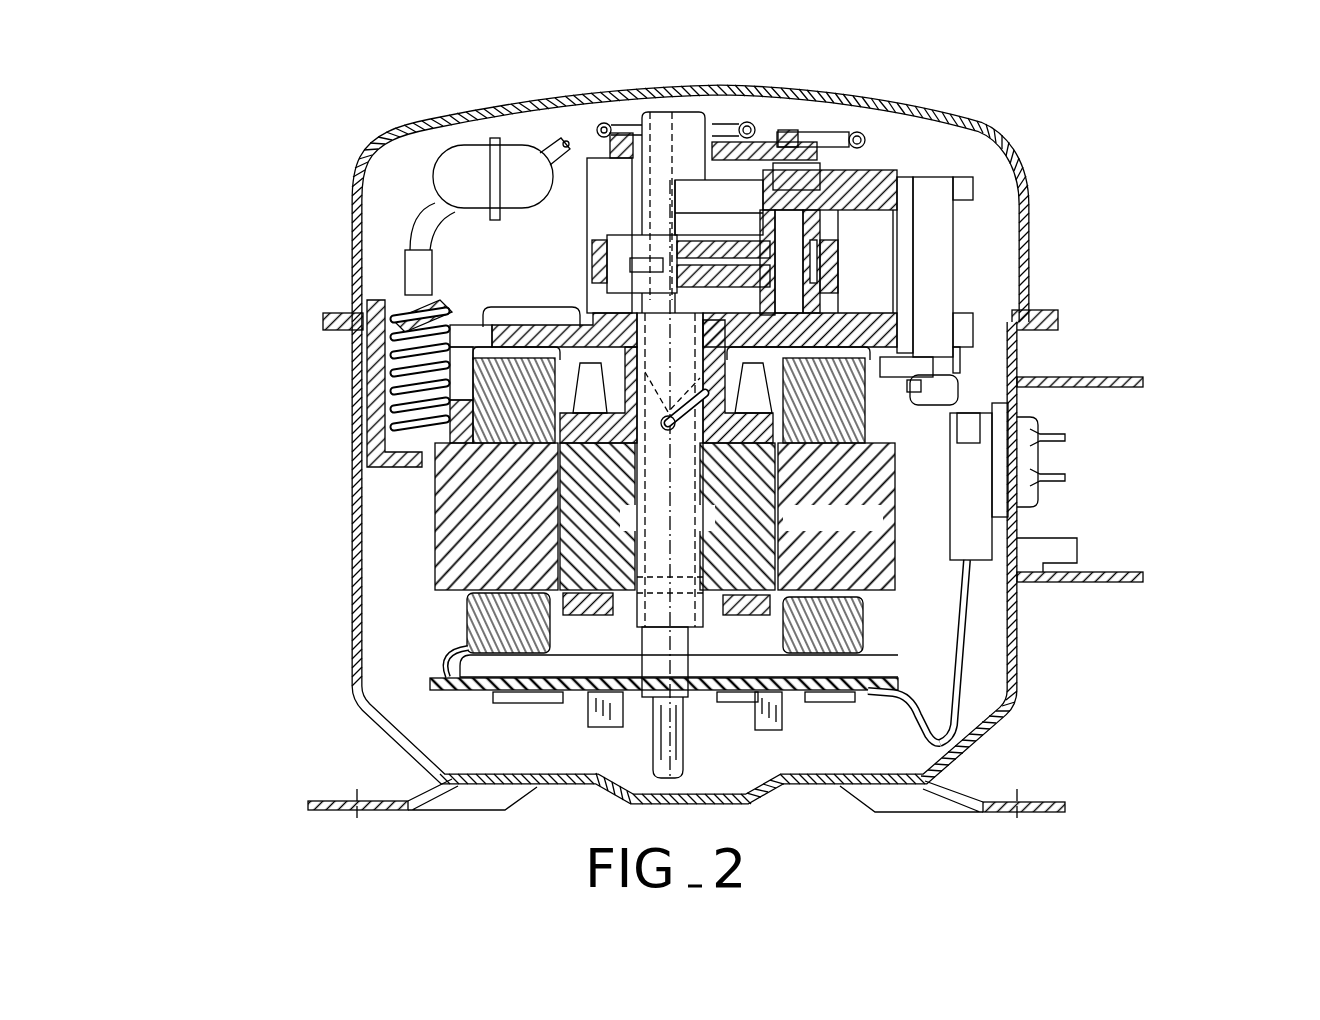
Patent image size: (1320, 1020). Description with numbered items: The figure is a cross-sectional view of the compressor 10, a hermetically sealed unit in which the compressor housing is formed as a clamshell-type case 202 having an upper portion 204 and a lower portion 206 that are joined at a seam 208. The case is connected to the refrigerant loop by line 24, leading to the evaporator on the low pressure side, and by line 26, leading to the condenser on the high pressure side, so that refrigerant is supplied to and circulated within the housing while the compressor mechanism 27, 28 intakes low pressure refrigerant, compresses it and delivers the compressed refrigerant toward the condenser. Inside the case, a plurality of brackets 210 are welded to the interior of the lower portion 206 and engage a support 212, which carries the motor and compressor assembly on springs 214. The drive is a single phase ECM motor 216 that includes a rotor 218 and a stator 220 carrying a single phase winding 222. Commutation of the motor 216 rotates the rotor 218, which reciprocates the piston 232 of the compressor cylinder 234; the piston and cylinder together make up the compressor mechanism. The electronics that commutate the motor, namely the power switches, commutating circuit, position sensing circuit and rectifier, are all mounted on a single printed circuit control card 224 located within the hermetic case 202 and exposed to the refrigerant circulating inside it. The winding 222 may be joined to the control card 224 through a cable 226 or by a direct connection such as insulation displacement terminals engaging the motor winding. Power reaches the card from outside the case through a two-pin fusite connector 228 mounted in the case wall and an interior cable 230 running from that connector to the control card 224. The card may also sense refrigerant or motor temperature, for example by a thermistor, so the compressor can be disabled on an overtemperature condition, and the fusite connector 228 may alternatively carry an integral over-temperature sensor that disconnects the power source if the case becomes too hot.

The compressor 10 is at (744, 428).
The line 24 is at (828, 128).
The line 26 is at (560, 142).
The compressor mechanism 27 is at (947, 177).
The compressor mechanism 28 is at (863, 642).
The clamshell-type case 202 is at (657, 449).
The upper portion 204 is at (352, 217).
The lower portion 206 is at (352, 611).
The seam 208 is at (323, 317).
The brackets 210 is at (367, 432).
The support 212 is at (395, 302).
The springs 214 is at (395, 355).
The single phase ECM motor 216 is at (462, 518).
The rotor 218 is at (683, 742).
The stator 220 is at (897, 557).
The single phase winding 222 is at (870, 413).
The printed circuit control card 224 is at (418, 683).
The cable 226 is at (458, 655).
The two-pin fusite connector 228 is at (1133, 481).
The interior cable 230 is at (968, 635).
The piston 232 is at (897, 227).
The compressor cylinder 234 is at (870, 251).